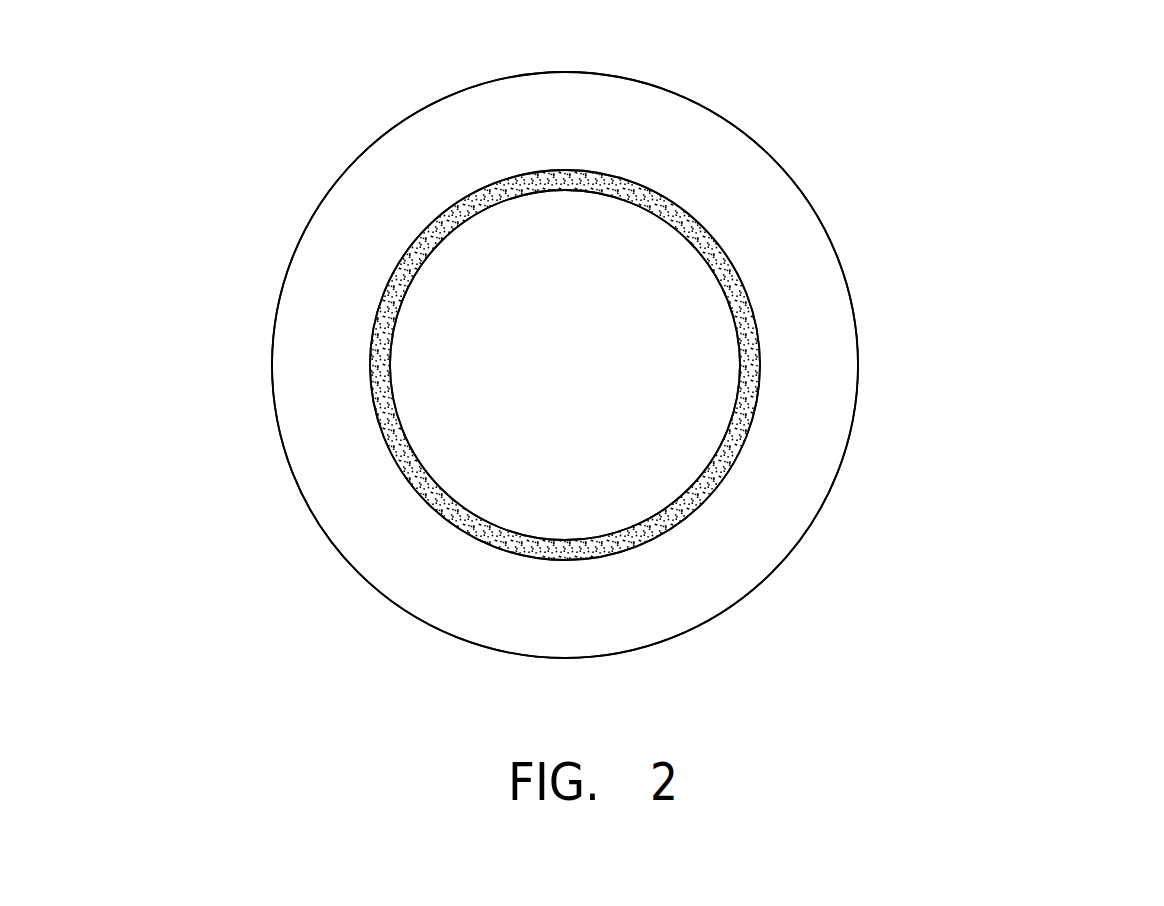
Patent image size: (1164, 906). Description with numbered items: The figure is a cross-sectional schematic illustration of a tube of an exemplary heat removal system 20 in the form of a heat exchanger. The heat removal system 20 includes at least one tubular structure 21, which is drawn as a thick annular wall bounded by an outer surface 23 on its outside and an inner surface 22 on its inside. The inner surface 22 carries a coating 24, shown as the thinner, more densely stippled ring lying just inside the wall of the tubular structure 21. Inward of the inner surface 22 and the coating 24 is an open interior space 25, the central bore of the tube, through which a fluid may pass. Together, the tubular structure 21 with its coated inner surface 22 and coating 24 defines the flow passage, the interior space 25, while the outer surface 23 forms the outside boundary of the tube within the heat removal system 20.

The heat removal system 20 is at (938, 213).
The tubular structure 21 is at (567, 115).
The inner surface 22 is at (690, 210).
The outer surface 23 is at (383, 137).
The coating 24 is at (383, 430).
The interior space 25 is at (707, 348).